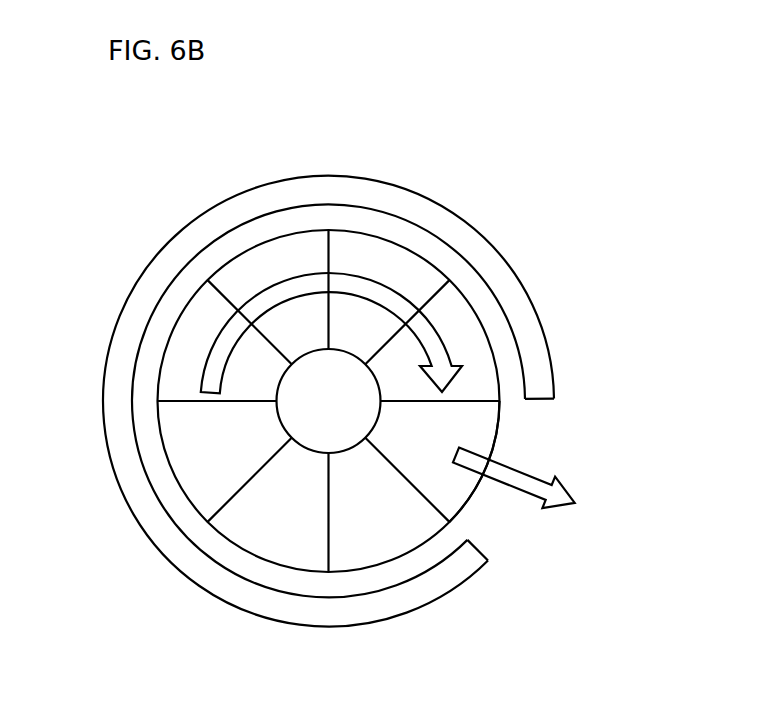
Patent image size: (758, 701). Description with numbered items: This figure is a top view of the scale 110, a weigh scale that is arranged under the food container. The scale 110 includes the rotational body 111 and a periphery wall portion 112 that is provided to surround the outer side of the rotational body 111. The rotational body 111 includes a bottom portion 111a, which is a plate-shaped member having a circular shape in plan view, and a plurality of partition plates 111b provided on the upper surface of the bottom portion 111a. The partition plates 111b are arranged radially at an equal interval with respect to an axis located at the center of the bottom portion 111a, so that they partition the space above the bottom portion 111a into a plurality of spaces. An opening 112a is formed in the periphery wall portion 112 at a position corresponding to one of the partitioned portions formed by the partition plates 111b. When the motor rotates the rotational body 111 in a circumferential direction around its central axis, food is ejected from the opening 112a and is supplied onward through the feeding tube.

The scale 110 is at (572, 241).
The rotational body 111 is at (644, 423).
The bottom portion 111a is at (478, 427).
The partition plates 111b is at (425, 495).
The periphery wall portion 112 is at (527, 323).
The opening 112a is at (550, 419).